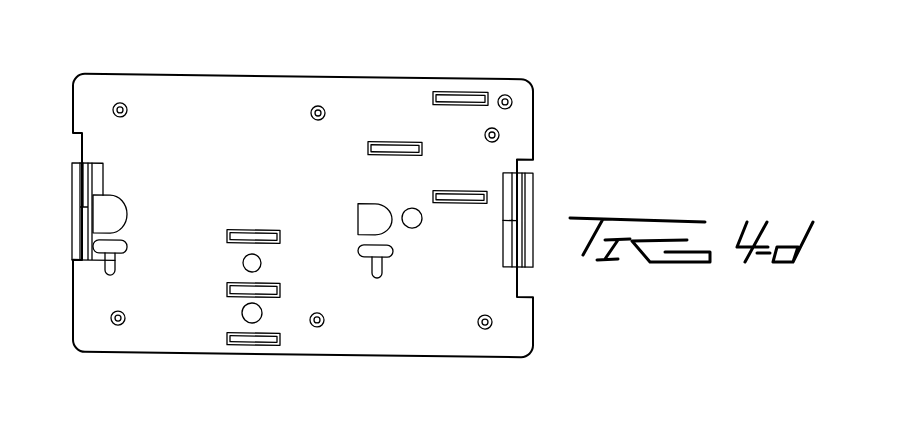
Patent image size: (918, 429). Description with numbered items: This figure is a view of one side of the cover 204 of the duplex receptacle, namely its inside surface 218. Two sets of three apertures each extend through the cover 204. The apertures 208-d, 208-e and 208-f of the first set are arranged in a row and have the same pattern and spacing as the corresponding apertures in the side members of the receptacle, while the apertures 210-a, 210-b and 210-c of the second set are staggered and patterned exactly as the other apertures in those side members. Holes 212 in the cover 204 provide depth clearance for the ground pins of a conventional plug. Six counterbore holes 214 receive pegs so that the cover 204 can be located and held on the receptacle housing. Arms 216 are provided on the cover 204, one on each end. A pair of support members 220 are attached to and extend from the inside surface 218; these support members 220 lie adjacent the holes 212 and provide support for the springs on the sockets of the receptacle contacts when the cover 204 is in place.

The cover 204 is at (330, 190).
The aperture 208-d is at (273, 232).
The aperture 208-e is at (275, 290).
The aperture 208-f is at (255, 346).
The aperture 210-a is at (450, 90).
The aperture 210-b is at (390, 141).
The aperture 210-c is at (433, 195).
The hole 212 is at (108, 205).
The counterbore hole 214 is at (123, 104).
The arm 216 is at (82, 248).
The inside surface 218 is at (243, 122).
The support member 220 is at (114, 275).